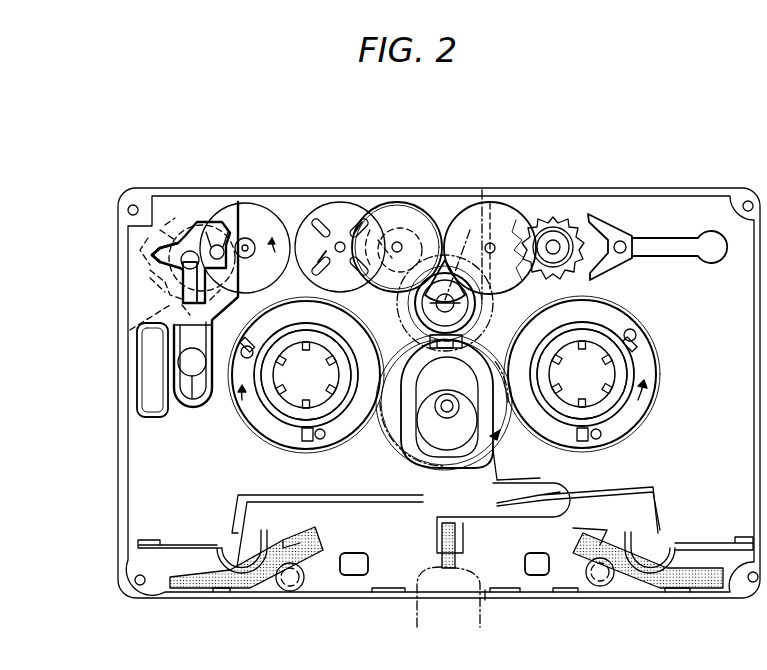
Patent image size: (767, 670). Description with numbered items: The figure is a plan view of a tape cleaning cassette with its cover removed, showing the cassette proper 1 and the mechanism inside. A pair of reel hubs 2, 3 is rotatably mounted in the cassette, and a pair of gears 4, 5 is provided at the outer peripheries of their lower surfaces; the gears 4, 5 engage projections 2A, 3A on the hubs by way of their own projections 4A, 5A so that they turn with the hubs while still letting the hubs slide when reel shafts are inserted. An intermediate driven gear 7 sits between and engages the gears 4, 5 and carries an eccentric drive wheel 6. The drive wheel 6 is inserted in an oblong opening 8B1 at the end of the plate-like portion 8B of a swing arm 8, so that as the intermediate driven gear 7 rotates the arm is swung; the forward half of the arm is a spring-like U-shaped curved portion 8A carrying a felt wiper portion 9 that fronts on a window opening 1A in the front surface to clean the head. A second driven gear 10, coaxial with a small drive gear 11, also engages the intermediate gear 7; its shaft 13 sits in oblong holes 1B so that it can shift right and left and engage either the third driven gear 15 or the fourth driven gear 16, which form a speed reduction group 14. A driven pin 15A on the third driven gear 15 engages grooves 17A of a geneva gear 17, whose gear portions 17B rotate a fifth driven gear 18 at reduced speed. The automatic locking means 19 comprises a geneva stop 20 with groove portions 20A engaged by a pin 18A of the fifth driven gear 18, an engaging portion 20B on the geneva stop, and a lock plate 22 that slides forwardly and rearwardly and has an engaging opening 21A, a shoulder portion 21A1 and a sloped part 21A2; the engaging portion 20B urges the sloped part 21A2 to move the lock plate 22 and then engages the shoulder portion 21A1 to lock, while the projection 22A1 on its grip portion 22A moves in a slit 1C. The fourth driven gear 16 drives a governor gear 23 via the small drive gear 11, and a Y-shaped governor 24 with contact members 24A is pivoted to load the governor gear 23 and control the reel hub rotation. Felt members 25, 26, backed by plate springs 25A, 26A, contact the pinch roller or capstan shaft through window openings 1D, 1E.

The cassette proper 1 is at (439, 393).
The window opening 1A is at (486, 592).
The oblong hole 1B is at (430, 315).
The slit 1C is at (186, 402).
The window opening 1D is at (612, 588).
The window opening 1E is at (285, 592).
The reel hub 2 is at (620, 375).
The projection 2A is at (640, 350).
The reel hub 3 is at (250, 440).
The projection 3A is at (305, 441).
The gear 4 is at (645, 385).
The projection 4A is at (640, 330).
The gear 5 is at (278, 400).
The projection 5A is at (322, 440).
The drive wheel 6 is at (440, 435).
The intermediate driven gear 7 is at (498, 435).
The swing arm 8 is at (548, 523).
The curved portion 8A is at (507, 523).
The plate-like portion 8B is at (410, 440).
The oblong opening 8B1 is at (428, 405).
The wiper portion 9 is at (448, 570).
The second driven gear 10 is at (482, 190).
The small drive gear 11 is at (447, 260).
The shaft 13 is at (460, 303).
The drive gear 14 is at (368, 200).
The third driven gear 15 is at (395, 205).
The driven pin 15A is at (386, 228).
The fourth driven gear 16 is at (505, 210).
The geneva gear 17 is at (340, 212).
The grooves 17A is at (300, 230).
The gear portions 17B is at (322, 225).
The fifth driven gear 18 is at (246, 215).
The pin 18A is at (188, 222).
The automatic locking means 19 is at (140, 316).
The geneva stop 20 is at (185, 252).
The groove portions 20A is at (210, 228).
The engaging portion 20B is at (190, 298).
The engaging opening 21A is at (172, 232).
The shoulder portion 21A1 is at (160, 287).
The sloped part 21A2 is at (150, 253).
The lock plate 22 is at (150, 340).
The grip portion 22A is at (190, 398).
The projection 22A1 is at (190, 362).
The governor gear 23 is at (560, 215).
The governor 24 is at (668, 237).
The detent pawl 24A is at (605, 232).
The felt member 25 is at (690, 588).
The plate spring 25A is at (700, 543).
The felt member 26 is at (225, 580).
The plate spring 26A is at (185, 548).